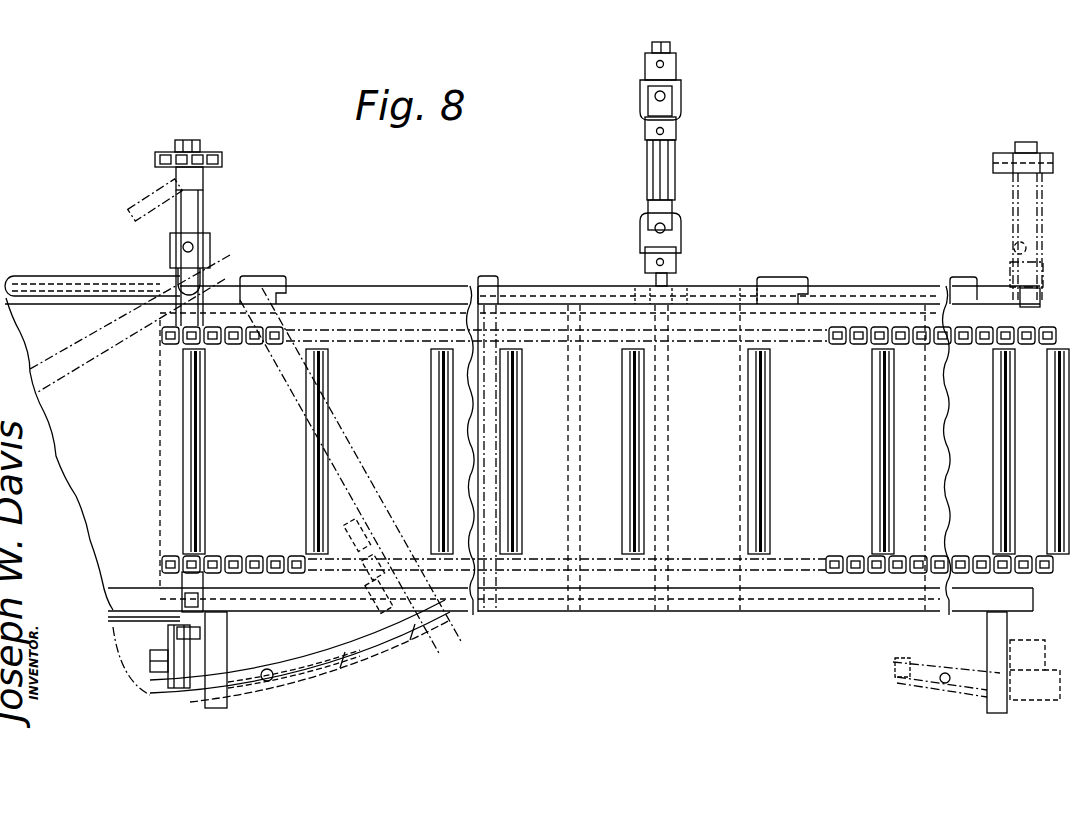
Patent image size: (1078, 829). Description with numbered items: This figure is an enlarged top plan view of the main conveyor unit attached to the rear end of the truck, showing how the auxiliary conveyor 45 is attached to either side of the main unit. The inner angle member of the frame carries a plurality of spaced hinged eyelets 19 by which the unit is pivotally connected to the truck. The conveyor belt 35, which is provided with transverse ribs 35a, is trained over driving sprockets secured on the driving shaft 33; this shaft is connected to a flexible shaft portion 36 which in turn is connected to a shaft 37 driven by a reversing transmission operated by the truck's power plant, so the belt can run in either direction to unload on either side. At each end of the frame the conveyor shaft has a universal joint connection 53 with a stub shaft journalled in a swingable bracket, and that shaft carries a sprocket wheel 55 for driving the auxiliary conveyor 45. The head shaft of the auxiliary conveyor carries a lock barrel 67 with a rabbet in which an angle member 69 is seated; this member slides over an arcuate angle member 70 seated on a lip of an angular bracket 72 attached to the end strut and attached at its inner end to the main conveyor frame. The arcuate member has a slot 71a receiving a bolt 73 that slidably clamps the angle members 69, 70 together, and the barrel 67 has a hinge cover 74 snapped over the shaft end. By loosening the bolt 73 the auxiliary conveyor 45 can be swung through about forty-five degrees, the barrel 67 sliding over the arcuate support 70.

The hinged eyelets 19 is at (268, 284).
The driving shaft 33 is at (669, 284).
The conveyor belt 35 is at (720, 548).
The transverse ribs 35a is at (630, 495).
The flexible shaft portion 36 is at (673, 181).
The shaft 37 is at (671, 54).
The auxiliary conveyor 45 is at (72, 318).
The universal joint connection 53 is at (205, 243).
The sprocket wheel 55 is at (222, 160).
The lock barrel 67 is at (183, 677).
The angle member 69 is at (247, 687).
The angle member 70 is at (345, 657).
The slot 71a is at (385, 655).
The angular bracket 72 is at (213, 709).
The bolt 73 is at (270, 681).
The hinge cover 74 is at (190, 652).